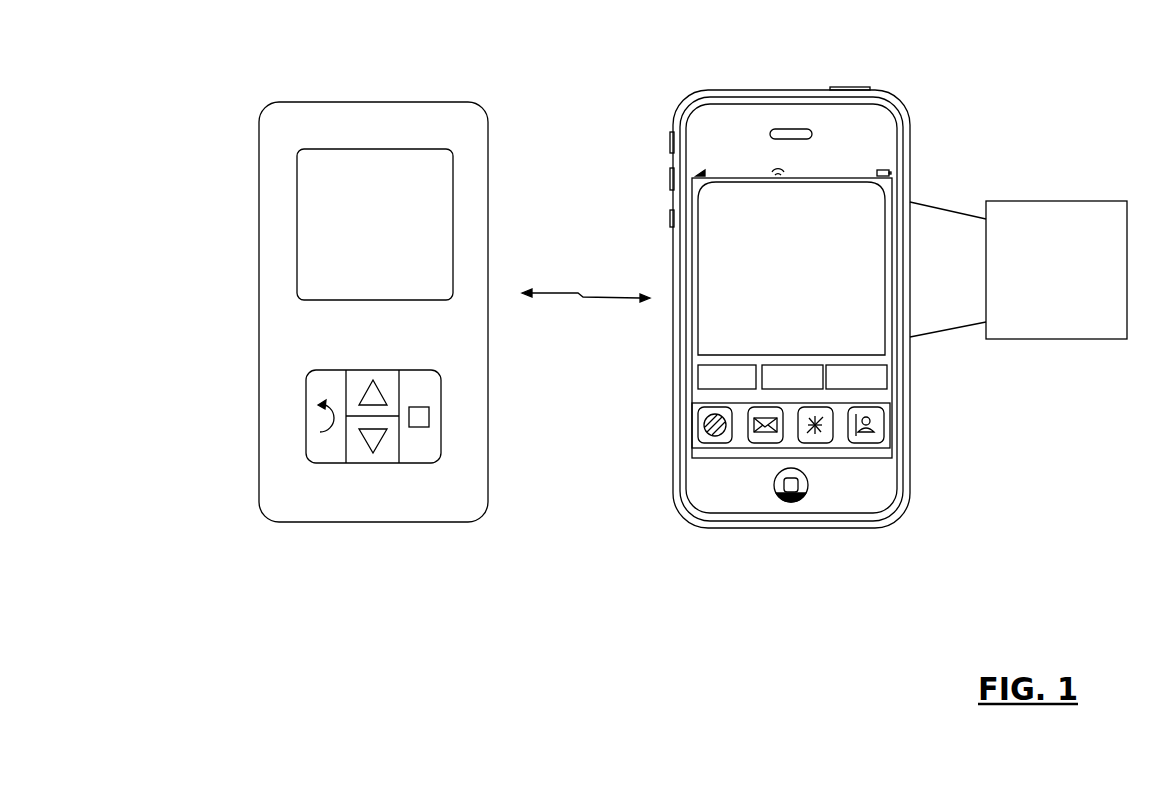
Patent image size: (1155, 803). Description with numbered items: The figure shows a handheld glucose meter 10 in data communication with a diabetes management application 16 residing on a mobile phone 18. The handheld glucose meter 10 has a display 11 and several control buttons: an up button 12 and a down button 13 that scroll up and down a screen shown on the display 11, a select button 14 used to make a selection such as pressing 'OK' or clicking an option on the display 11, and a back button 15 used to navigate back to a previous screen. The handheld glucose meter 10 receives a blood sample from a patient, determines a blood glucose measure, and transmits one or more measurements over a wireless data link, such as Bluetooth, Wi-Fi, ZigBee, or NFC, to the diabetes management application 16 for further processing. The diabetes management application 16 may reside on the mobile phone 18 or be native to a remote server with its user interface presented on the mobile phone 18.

The handheld glucose meter 10 is at (403, 102).
The display 11 is at (453, 196).
The up button 12 is at (380, 393).
The down button 13 is at (382, 440).
The select button 14 is at (429, 410).
The back button 15 is at (322, 420).
The diabetes management application 16 is at (1104, 201).
The mobile phone 18 is at (738, 90).